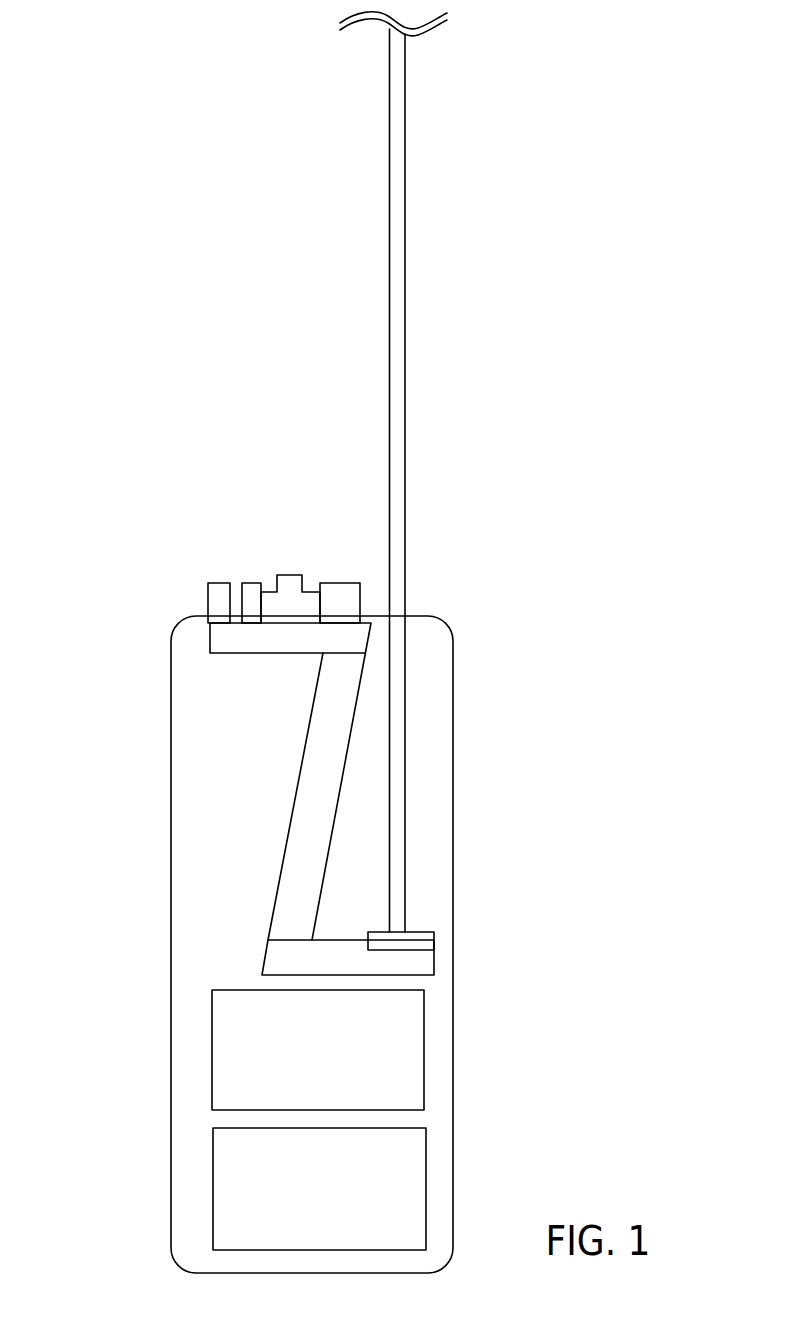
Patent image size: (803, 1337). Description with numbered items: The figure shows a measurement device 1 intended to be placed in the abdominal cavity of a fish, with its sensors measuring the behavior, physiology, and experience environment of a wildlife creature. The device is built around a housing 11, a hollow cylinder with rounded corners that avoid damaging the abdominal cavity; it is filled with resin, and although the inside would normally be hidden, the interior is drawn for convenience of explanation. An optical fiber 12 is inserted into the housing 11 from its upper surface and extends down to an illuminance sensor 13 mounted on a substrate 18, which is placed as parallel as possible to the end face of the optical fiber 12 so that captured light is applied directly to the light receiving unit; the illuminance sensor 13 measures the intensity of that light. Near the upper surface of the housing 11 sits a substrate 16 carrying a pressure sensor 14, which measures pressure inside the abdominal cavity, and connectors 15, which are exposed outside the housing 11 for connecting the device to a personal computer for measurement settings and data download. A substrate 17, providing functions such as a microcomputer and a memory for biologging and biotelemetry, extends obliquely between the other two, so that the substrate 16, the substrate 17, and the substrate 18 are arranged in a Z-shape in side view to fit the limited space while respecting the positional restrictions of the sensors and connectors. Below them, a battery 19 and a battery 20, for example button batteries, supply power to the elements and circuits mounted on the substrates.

The measurement device 1 is at (548, 92).
The housing 11 is at (454, 690).
The optical fiber 12 is at (405, 478).
The illuminance sensor 13 is at (434, 932).
The pressure sensor 14 is at (278, 574).
The connectors 15 is at (232, 593).
The substrate 16 is at (232, 640).
The substrate 17 is at (300, 801).
The substrate 18 is at (434, 957).
The battery 19 is at (417, 1052).
The battery 20 is at (417, 1192).